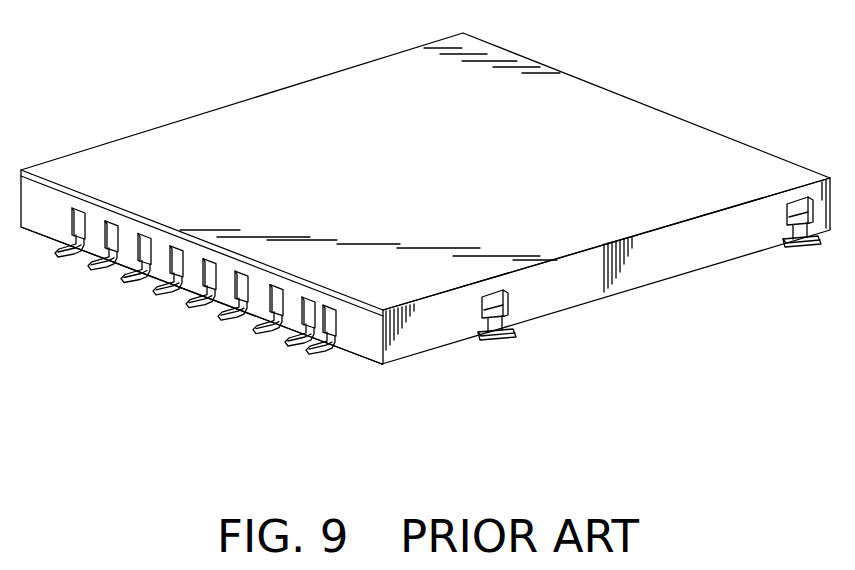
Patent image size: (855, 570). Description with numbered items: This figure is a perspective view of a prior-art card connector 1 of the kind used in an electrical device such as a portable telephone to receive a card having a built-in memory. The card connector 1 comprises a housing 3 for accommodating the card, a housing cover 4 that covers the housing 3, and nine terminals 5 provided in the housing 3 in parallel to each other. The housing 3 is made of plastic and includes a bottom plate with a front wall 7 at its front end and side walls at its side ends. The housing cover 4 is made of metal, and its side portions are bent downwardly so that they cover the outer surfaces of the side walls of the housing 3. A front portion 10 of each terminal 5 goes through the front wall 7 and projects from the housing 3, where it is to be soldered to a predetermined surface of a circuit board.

The card connector 1 is at (425, 231).
The housing 3 is at (356, 360).
The housing cover 4 is at (684, 243).
The terminals 5 is at (285, 340).
The front wall 7 is at (42, 213).
The front portion of terminal 10 is at (192, 300).